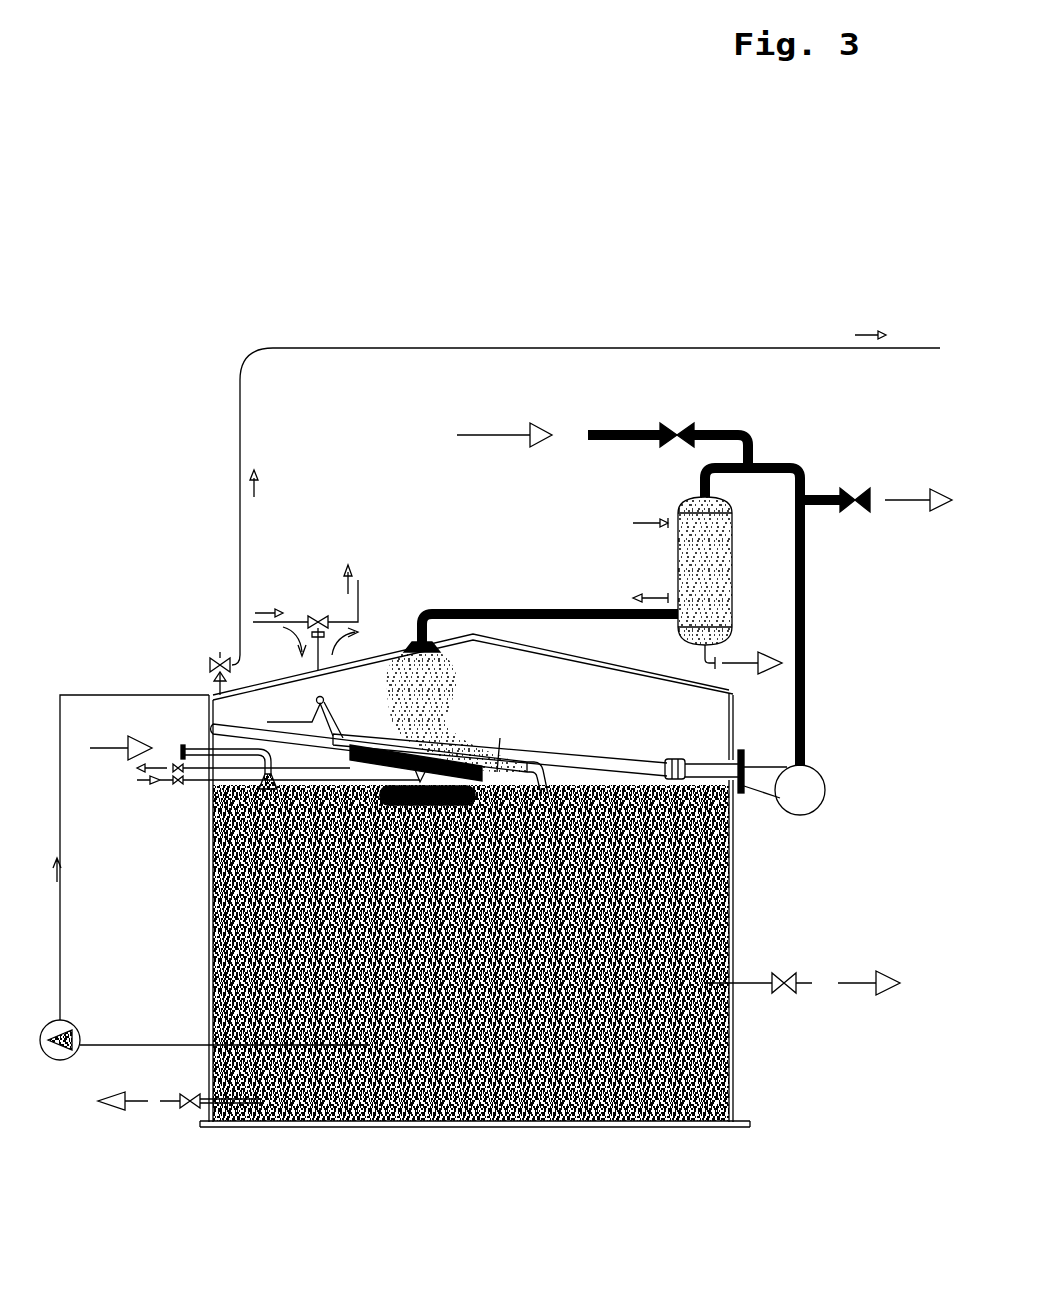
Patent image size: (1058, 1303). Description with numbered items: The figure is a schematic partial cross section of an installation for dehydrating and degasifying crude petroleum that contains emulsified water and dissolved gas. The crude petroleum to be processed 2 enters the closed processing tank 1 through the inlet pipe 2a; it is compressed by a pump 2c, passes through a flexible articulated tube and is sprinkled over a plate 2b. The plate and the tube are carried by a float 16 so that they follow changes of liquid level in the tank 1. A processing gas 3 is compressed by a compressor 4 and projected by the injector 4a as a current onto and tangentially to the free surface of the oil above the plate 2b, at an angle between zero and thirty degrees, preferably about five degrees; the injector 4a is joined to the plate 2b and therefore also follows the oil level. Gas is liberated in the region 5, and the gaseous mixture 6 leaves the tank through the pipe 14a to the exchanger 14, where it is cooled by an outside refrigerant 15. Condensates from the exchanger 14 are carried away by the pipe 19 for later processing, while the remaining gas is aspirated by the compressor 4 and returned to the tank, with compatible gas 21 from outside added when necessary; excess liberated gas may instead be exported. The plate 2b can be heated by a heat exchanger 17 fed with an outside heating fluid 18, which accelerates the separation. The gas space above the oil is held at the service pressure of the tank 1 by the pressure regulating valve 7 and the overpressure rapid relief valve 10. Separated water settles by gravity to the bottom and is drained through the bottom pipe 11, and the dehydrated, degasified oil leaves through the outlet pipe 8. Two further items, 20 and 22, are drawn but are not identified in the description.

The closed processing tank 1 is at (208, 688).
The crude petroleum to be processed 2 is at (270, 795).
The inlet pipe 2a is at (183, 745).
The plate 2b is at (522, 827).
The pump 2c is at (73, 1022).
The processing gas 3 is at (500, 735).
The compressor 4 is at (817, 773).
The injector 4a is at (587, 758).
The gas liberation point 5 is at (445, 728).
The gaseous mixture 6 is at (335, 698).
The pressure regulating valve 7 is at (305, 617).
The outlet pipe 8 is at (750, 980).
The overpressure rapid relief valve 10 is at (218, 653).
The bottom pipe 11 is at (180, 1104).
The exchanger 14 is at (705, 571).
The pipe 14a is at (493, 611).
The outside refrigerant 15 is at (673, 521).
The float 16 is at (428, 805).
The heat exchanger 17 is at (497, 772).
The outside heating fluid 18 is at (278, 787).
The pipe 19 is at (690, 661).
The pipe 20 is at (805, 633).
The compatible gas 21 is at (602, 430).
The outlet pipe 22 is at (882, 487).